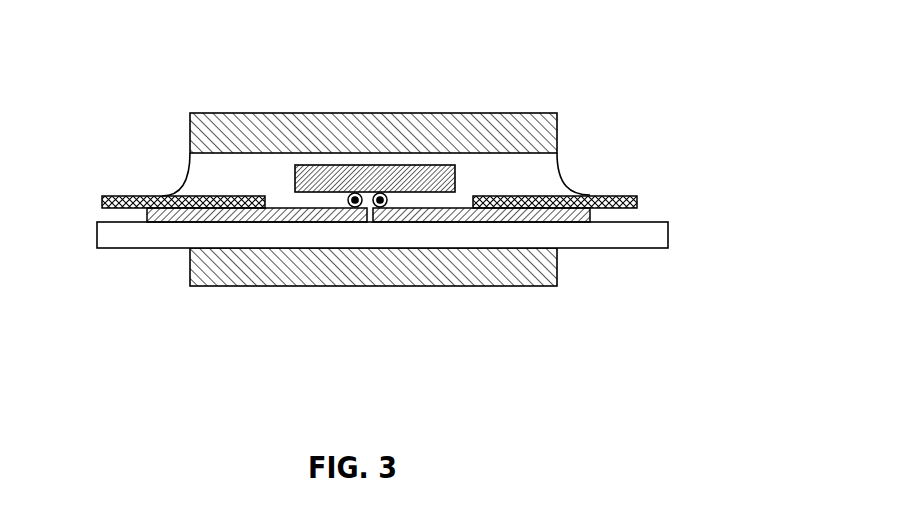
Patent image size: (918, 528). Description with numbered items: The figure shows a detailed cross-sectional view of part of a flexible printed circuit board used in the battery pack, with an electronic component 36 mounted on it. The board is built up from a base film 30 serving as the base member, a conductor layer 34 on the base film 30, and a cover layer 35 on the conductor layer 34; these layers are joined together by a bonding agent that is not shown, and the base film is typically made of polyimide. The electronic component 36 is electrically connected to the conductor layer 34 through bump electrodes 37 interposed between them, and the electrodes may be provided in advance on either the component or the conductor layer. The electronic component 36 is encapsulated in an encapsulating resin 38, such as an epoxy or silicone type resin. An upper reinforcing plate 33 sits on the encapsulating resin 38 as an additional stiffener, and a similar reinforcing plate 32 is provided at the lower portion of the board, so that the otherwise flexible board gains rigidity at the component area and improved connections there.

The base film 30 is at (665, 221).
The reinforcing plate 32 is at (553, 288).
The upper reinforcing plate 33 is at (362, 113).
The conductor layer 34 is at (146, 217).
The cover layer 35 is at (615, 195).
The electronic component 36 is at (293, 175).
The bump electrodes 37 is at (391, 200).
The encapsulating resin 38 is at (198, 182).